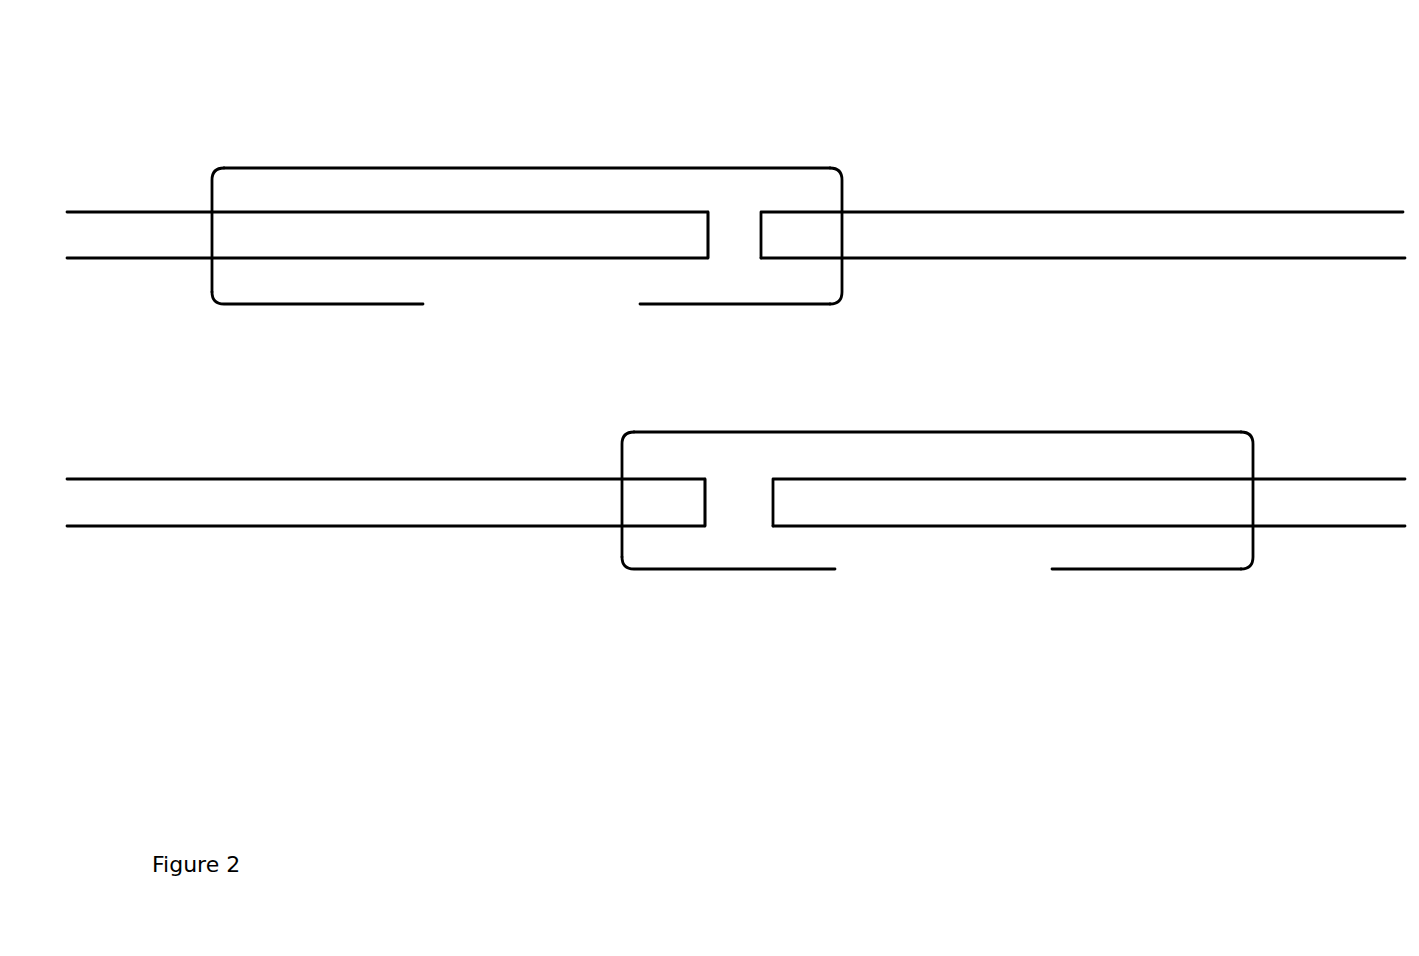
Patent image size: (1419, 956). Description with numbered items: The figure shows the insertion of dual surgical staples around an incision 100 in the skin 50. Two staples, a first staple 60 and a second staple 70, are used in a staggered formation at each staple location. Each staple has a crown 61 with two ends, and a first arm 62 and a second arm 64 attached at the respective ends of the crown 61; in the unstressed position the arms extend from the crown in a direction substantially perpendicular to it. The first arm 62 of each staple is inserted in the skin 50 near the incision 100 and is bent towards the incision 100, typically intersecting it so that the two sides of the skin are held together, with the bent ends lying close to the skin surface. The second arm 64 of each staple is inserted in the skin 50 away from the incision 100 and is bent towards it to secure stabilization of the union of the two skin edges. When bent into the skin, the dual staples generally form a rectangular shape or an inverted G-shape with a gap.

The skin 50 is at (1113, 165).
The first staple 60 is at (555, 195).
The second staple 70 is at (938, 507).
The crown 61 is at (455, 168).
The first arm 62 is at (783, 305).
The second arm 64 is at (260, 307).
The incision 100 is at (706, 263).